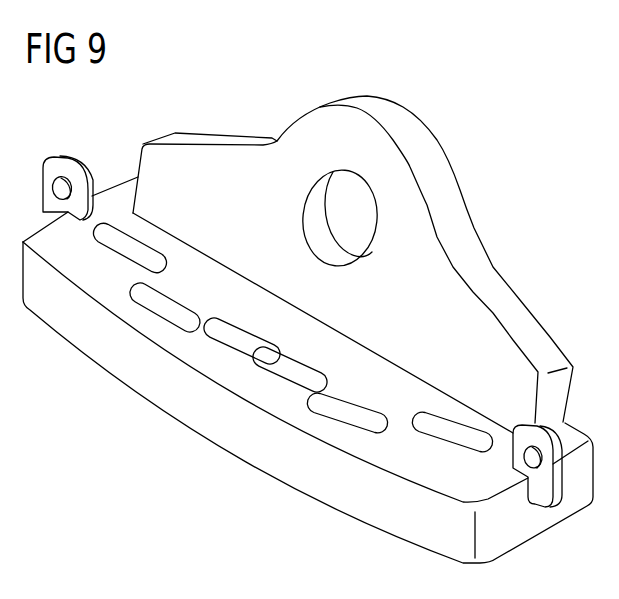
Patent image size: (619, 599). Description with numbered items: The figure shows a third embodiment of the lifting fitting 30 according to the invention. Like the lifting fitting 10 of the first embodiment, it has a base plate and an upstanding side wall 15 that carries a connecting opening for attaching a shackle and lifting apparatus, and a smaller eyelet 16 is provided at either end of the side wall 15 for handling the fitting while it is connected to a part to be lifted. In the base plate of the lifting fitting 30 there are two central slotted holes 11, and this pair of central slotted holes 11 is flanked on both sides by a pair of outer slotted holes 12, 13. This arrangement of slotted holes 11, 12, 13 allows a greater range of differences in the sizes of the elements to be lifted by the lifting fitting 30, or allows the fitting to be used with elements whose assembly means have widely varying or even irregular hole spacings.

The lifting fitting 10 is at (308, 359).
The central slotted holes 11 is at (242, 343).
The outer slotted holes 12 is at (133, 252).
The outer slotted holes 13 is at (417, 417).
The side wall 15 is at (493, 290).
The smaller eyelets 16 is at (513, 460).
The lifting fitting 30 is at (308, 329).